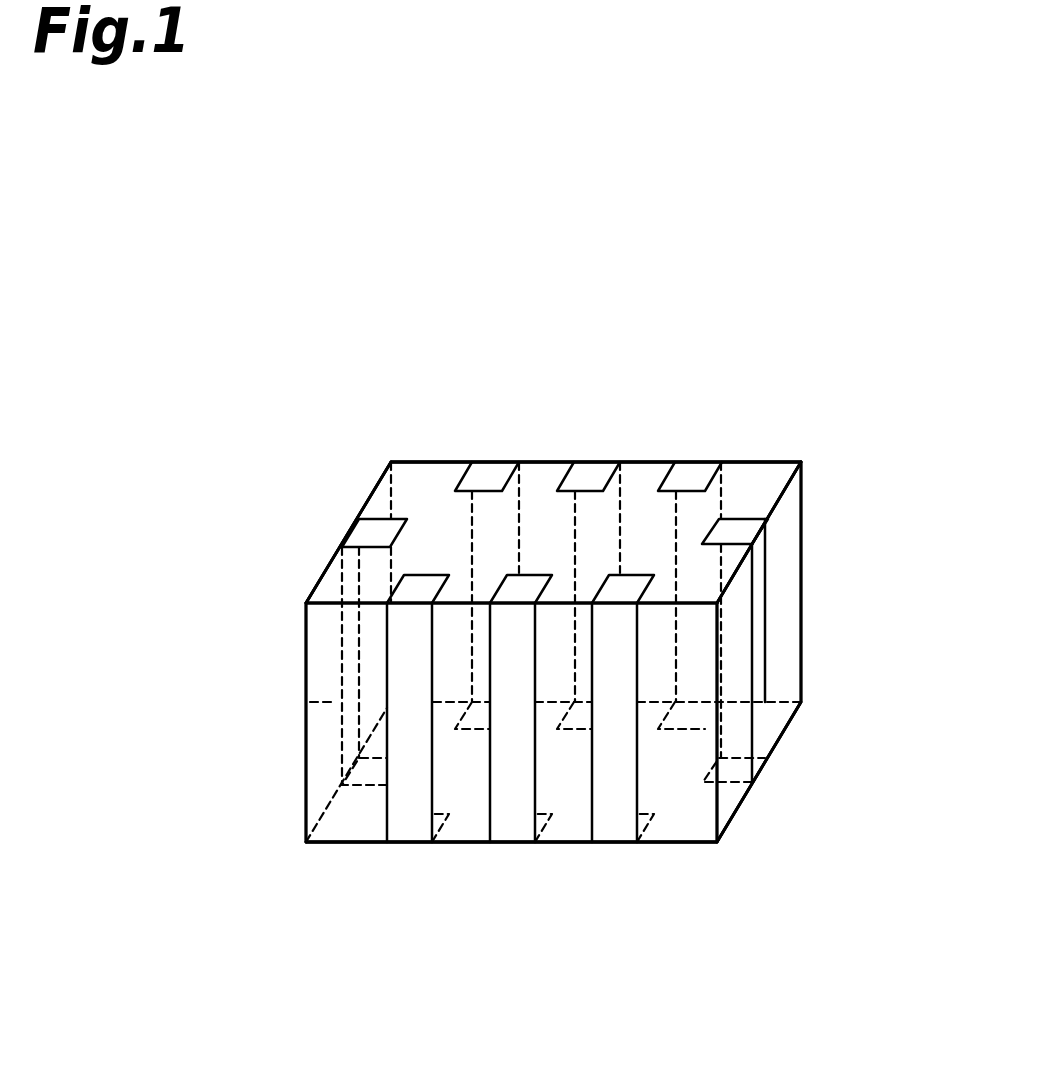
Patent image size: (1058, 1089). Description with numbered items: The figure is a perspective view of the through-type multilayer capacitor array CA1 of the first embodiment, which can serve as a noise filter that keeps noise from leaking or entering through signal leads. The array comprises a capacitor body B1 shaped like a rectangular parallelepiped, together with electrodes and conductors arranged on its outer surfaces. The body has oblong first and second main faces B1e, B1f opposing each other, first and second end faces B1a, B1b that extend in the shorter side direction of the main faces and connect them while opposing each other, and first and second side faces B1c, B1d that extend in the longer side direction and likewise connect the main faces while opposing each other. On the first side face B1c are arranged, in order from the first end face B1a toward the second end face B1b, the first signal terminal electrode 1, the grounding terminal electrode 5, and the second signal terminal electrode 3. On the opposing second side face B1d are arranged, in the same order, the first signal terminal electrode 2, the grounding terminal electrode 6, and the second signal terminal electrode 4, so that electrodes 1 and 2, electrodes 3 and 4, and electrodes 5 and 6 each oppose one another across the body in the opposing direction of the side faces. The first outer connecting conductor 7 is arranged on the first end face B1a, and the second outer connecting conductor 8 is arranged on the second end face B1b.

The through-type multilayer capacitor array CA1 is at (765, 309).
The capacitor body B1 is at (778, 460).
The first end face B1a is at (306, 703).
The second end face B1b is at (785, 648).
The first side face B1c is at (477, 777).
The second side face B1d is at (775, 582).
The first main face B1e is at (432, 482).
The second main face B1f is at (678, 798).
The first signal terminal electrode 1 is at (413, 820).
The first signal terminal electrode 2 is at (488, 472).
The second signal terminal electrode 3 is at (618, 818).
The second signal terminal electrode 4 is at (697, 470).
The grounding terminal electrode 5 is at (513, 820).
The grounding terminal electrode 6 is at (592, 470).
The first outer connecting conductor 7 is at (373, 536).
The second outer connecting conductor 8 is at (760, 710).